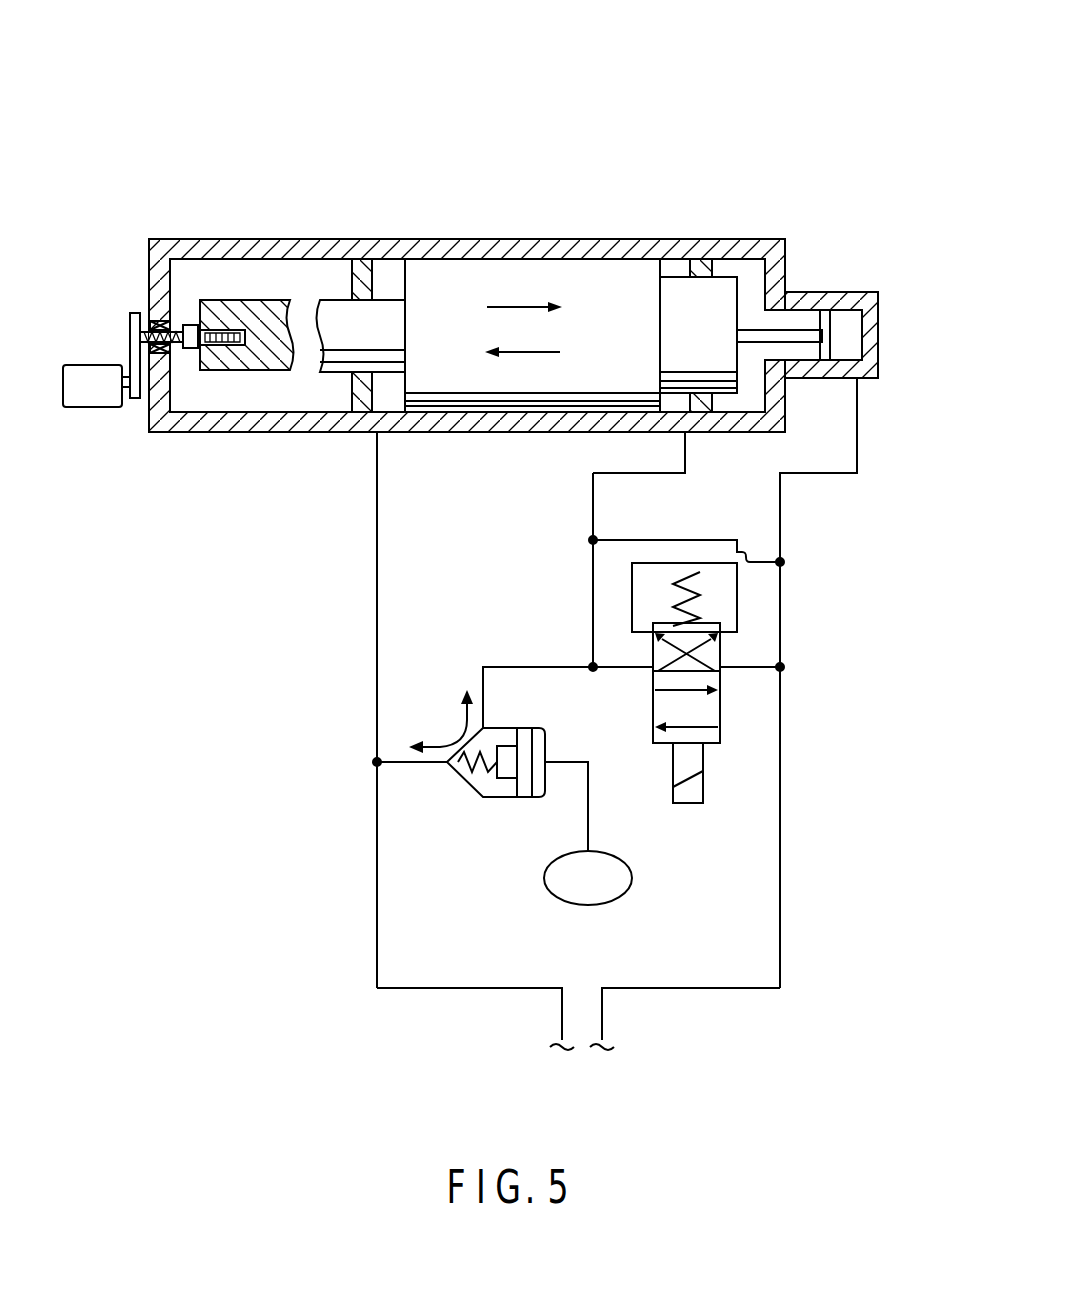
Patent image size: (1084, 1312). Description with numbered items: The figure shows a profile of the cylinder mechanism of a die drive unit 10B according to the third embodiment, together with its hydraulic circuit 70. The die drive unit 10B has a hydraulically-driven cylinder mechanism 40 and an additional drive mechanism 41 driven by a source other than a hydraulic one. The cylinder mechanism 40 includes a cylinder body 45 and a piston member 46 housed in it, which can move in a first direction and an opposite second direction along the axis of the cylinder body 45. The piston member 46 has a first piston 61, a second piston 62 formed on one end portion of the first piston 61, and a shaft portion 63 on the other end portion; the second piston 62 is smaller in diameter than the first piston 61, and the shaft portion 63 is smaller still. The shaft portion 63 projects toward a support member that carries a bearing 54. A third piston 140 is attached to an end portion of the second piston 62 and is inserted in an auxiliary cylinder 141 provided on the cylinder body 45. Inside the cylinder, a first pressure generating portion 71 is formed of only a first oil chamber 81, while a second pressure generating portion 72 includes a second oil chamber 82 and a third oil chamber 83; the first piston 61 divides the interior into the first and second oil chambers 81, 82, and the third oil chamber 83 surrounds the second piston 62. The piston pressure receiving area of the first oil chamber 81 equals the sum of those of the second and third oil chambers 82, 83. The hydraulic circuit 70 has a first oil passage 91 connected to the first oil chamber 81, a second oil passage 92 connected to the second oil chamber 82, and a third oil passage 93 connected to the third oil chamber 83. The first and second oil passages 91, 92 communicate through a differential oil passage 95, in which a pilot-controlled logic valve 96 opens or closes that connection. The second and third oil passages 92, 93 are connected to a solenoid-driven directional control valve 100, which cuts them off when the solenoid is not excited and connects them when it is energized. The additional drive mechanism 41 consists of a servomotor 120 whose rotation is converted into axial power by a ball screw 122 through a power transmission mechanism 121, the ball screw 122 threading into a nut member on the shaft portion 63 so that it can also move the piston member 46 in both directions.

The die drive unit 10B is at (449, 115).
The cylinder mechanism 40 is at (756, 236).
The additional drive mechanism 41 is at (125, 415).
The cylinder body 45 is at (520, 239).
The piston member 46 is at (485, 398).
The bearing 54 is at (157, 318).
The first piston 61 is at (625, 283).
The second piston 62 is at (722, 285).
The shaft portion 63 is at (232, 300).
The hydraulic circuit 70 is at (862, 694).
The first pressure generating portion 71 is at (387, 245).
The second pressure generating portion 72 is at (679, 245).
The first oil chamber 81 is at (392, 398).
The second oil chamber 82 is at (673, 408).
The third oil chamber 83 is at (840, 350).
The first oil passage 91 is at (377, 632).
The second oil passage 92 is at (598, 493).
The third oil passage 93 is at (782, 522).
The differential oil passage 95 is at (512, 663).
The logic valve 96 is at (467, 788).
The directional control valve 100 is at (710, 745).
The servomotor 120 is at (68, 410).
The power transmission mechanism 121 is at (130, 351).
The ball screw 122 is at (140, 333).
The third piston 140 is at (830, 318).
The auxiliary cylinder 141 is at (865, 291).